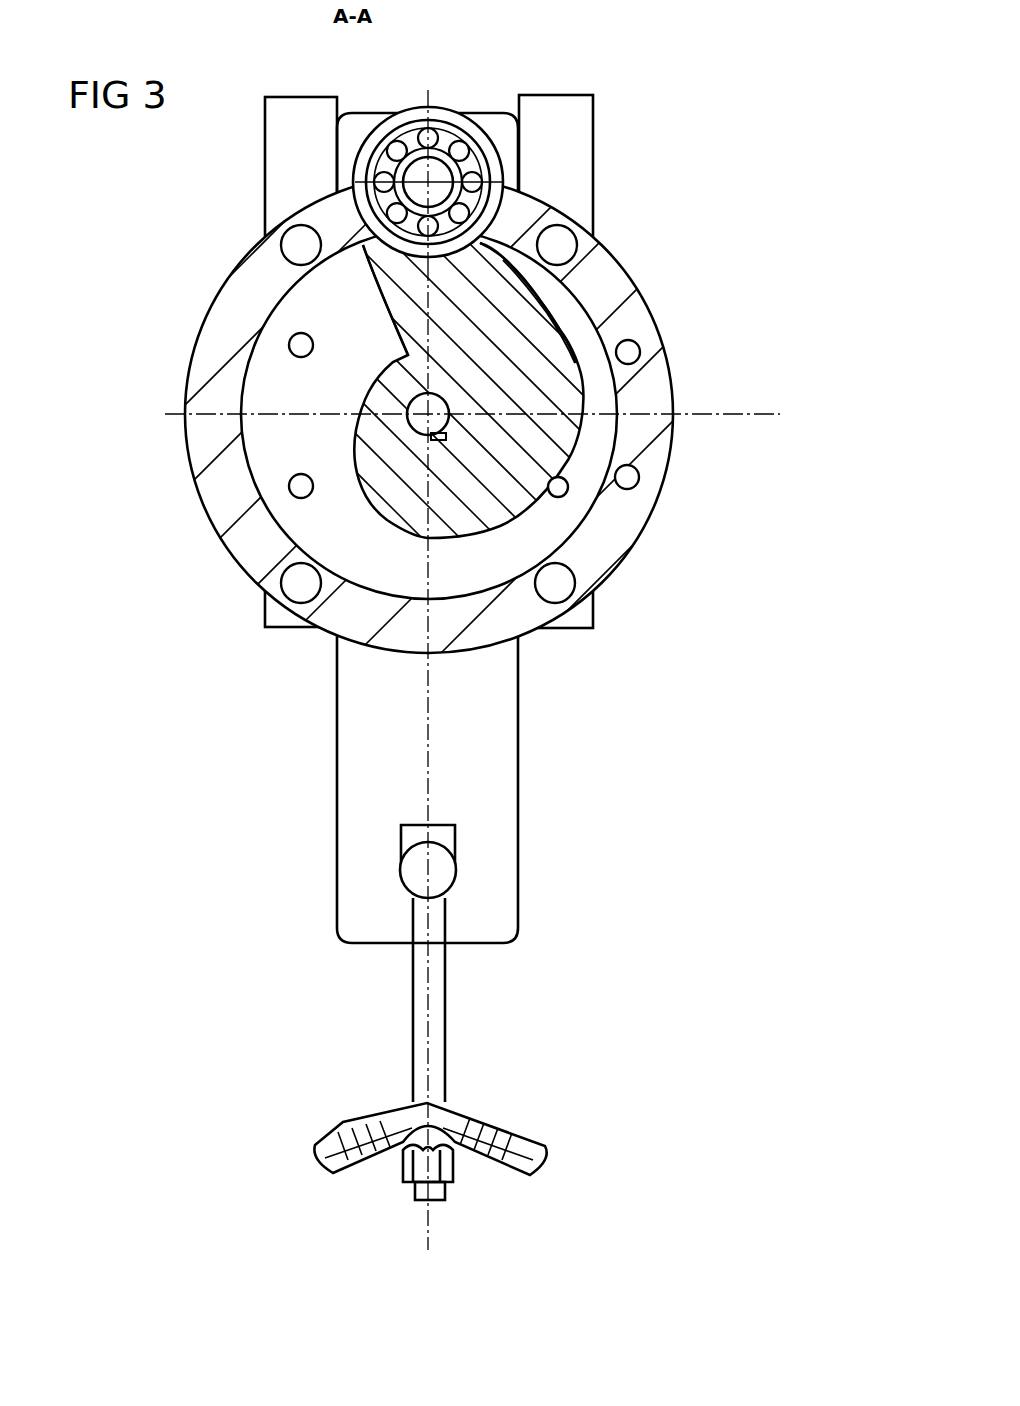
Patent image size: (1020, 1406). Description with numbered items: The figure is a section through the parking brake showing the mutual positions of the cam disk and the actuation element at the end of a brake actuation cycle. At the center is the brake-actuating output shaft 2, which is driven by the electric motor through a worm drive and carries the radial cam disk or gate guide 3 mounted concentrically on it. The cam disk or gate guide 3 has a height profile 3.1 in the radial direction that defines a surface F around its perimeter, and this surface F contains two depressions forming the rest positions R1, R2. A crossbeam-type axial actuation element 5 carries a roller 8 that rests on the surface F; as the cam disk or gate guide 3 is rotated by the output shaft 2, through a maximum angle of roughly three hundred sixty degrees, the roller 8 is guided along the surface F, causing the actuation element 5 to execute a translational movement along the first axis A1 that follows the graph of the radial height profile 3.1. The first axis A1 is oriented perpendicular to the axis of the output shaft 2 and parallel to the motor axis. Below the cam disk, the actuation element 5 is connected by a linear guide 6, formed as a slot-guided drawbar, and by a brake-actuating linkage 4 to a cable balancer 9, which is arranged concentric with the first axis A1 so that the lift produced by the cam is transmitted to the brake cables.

The brake-actuating output shaft 2 is at (418, 420).
The cam disk or gate guide 3 is at (532, 400).
The height profile 3.1 is at (567, 482).
The brake-actuating linkage 4 is at (437, 1027).
The axial actuation element 5 is at (430, 180).
The linear guide 6 is at (503, 742).
The roller 8 is at (492, 168).
The cable balancer 9 is at (327, 1147).
The rest position R1 is at (553, 323).
The rest position R2 is at (407, 256).
The surface F is at (404, 532).
The first axis A1 is at (472, 770).